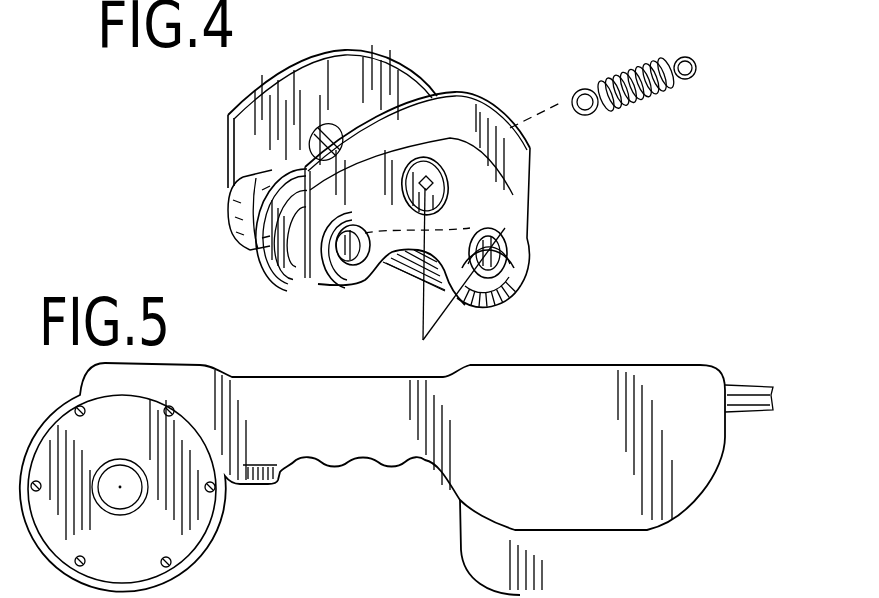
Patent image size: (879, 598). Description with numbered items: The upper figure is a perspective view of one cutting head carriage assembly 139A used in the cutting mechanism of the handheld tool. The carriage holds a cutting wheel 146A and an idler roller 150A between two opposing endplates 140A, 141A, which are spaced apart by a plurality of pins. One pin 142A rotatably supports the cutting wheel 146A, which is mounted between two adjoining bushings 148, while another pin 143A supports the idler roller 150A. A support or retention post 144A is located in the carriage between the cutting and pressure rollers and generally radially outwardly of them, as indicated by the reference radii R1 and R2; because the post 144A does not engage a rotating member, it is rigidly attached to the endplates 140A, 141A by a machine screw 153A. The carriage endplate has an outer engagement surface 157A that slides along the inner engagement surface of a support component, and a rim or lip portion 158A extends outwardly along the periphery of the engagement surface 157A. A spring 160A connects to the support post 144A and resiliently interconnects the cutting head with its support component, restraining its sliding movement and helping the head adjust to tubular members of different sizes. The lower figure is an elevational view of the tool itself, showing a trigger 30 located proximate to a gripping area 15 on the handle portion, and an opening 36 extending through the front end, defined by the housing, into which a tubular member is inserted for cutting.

In FIG. 4, the endplate 141A is at (235, 177).
In FIG. 4, the rim 158A is at (417, 118).
In FIG. 4, the carriage engagement surface 157A is at (512, 190).
In FIG. 4, the support post 144A is at (335, 127).
In FIG. 4, the carriage assembly 139A is at (232, 202).
In FIG. 4, the bushing 148 is at (243, 231).
In FIG. 4, the cutting wheel 146A is at (255, 258).
In FIG. 4, the machine screw 153A is at (432, 176).
In FIG. 4, the pin 142A is at (352, 262).
In FIG. 4, the endplate 140A is at (518, 208).
In FIG. 4, the pin 143A is at (502, 252).
In FIG. 4, the idler roller 150A is at (488, 303).
In FIG. 4, the spring 160A is at (638, 100).
In FIG. 4, the reference radius R2 is at (420, 322).
In FIG. 4, the reference radius R1 is at (438, 320).
In FIG. 5, the gripping area 15 is at (354, 392).
In FIG. 5, the opening 36 is at (120, 477).
In FIG. 5, the trigger 30 is at (258, 485).